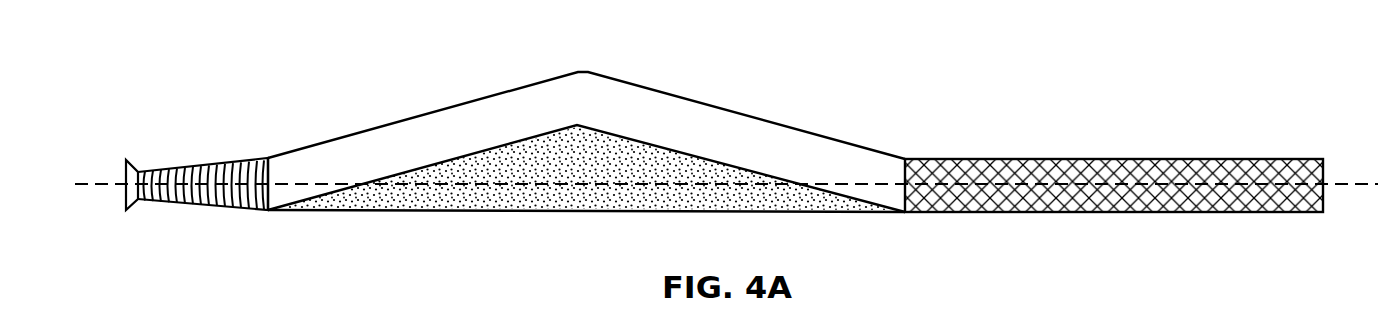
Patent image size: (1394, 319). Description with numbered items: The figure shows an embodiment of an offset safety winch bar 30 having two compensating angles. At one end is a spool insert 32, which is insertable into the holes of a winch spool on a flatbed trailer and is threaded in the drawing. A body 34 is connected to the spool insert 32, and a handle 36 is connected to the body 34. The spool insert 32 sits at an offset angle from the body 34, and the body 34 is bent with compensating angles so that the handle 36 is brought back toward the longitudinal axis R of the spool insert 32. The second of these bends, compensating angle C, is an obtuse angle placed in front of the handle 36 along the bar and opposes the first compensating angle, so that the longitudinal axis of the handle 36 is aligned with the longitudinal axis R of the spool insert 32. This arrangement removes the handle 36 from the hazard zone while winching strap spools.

The offset safety winch bar 30 is at (726, 109).
The spool insert 32 is at (237, 161).
The body 34 is at (443, 122).
The handle 36 is at (1092, 168).
The compensating angle C is at (952, 152).
The longitudinal axis R is at (1345, 182).